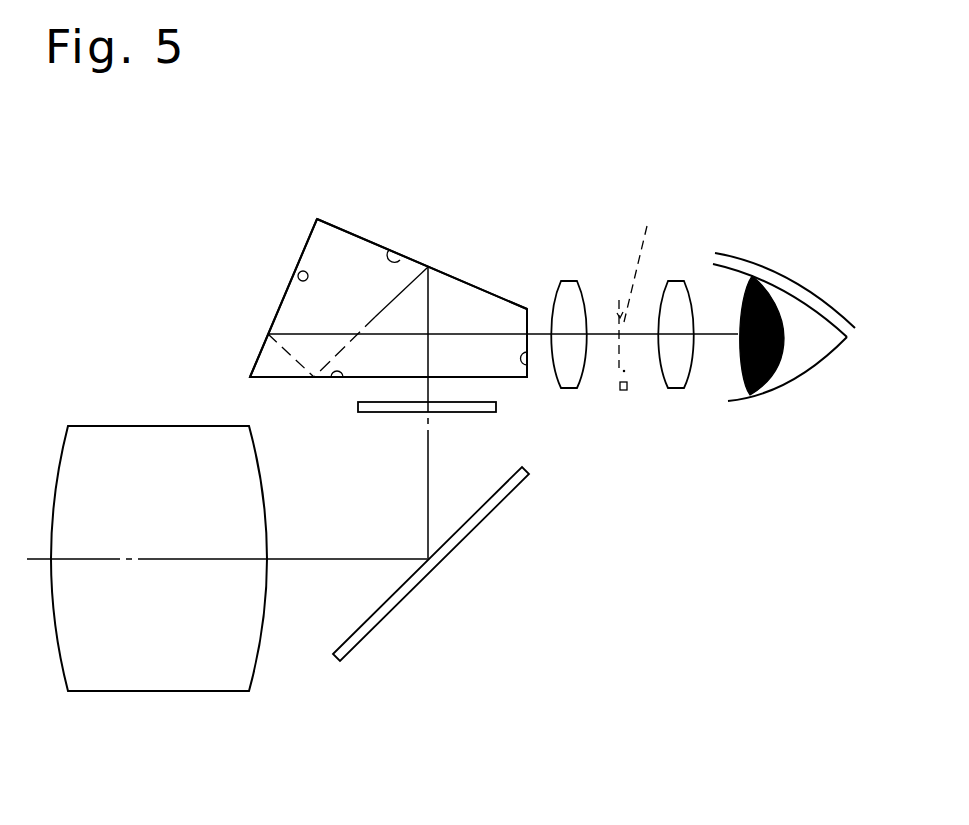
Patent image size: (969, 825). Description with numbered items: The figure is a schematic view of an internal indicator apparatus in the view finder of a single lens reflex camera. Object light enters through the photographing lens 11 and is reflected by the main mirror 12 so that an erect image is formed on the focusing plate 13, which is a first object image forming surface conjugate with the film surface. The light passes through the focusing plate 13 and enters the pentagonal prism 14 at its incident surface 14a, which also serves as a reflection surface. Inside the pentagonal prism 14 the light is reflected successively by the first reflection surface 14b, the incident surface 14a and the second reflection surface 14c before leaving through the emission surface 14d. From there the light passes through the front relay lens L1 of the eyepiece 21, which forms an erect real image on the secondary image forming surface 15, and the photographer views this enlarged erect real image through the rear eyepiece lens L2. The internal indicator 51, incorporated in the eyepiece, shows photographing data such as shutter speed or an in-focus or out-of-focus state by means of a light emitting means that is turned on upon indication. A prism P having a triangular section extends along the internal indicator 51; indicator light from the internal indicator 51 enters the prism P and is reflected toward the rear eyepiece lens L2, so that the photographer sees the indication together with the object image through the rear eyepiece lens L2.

The photographing lens 11 is at (137, 447).
The main mirror 12 is at (378, 607).
The focusing plate 13 is at (380, 412).
The pentagonal prism 14 is at (337, 253).
The incident surface 14a is at (340, 374).
The first reflection surface 14b is at (392, 251).
The second reflection surface 14c is at (298, 272).
The emission surface 14d is at (530, 378).
The secondary image forming surface 15 is at (643, 261).
The eyepiece 21 is at (612, 258).
The internal indicator 51 is at (622, 391).
The front relay lens L1 is at (567, 305).
The rear eyepiece lens L2 is at (673, 305).
The prism P is at (624, 371).